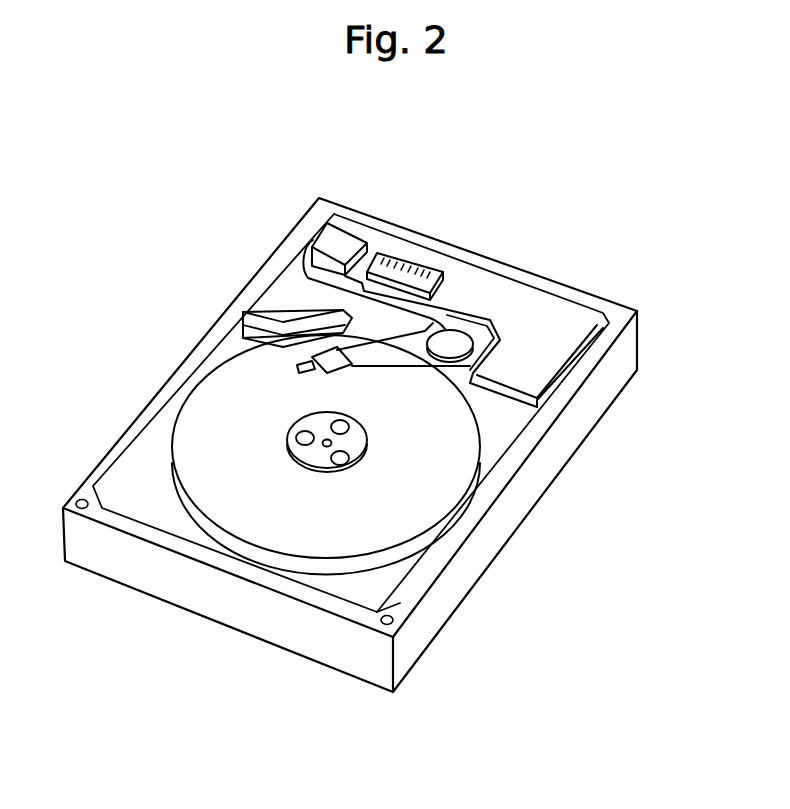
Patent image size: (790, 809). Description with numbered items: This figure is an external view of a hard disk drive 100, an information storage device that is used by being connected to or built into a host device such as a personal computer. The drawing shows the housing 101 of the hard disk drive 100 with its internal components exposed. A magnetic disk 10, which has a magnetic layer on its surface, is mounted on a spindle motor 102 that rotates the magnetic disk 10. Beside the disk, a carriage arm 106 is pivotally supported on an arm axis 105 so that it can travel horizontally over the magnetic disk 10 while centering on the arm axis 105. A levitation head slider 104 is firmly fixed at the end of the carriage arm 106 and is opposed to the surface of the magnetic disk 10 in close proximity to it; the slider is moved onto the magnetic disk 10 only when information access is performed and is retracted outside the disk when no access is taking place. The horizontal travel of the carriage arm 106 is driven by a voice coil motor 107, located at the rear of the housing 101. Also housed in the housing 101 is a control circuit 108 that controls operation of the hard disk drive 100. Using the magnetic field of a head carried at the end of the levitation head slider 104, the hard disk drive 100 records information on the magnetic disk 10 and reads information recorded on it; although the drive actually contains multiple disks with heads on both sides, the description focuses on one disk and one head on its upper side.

The hard disk drive 100 is at (515, 172).
The magnetic disk 10 is at (260, 497).
The housing 101 is at (587, 366).
The spindle motor 102 is at (318, 416).
The levitation head slider 104 is at (327, 358).
The arm axis 105 is at (449, 352).
The carriage arm 106 is at (403, 352).
The voice coil motor 107 is at (527, 308).
The control circuit 108 is at (392, 258).